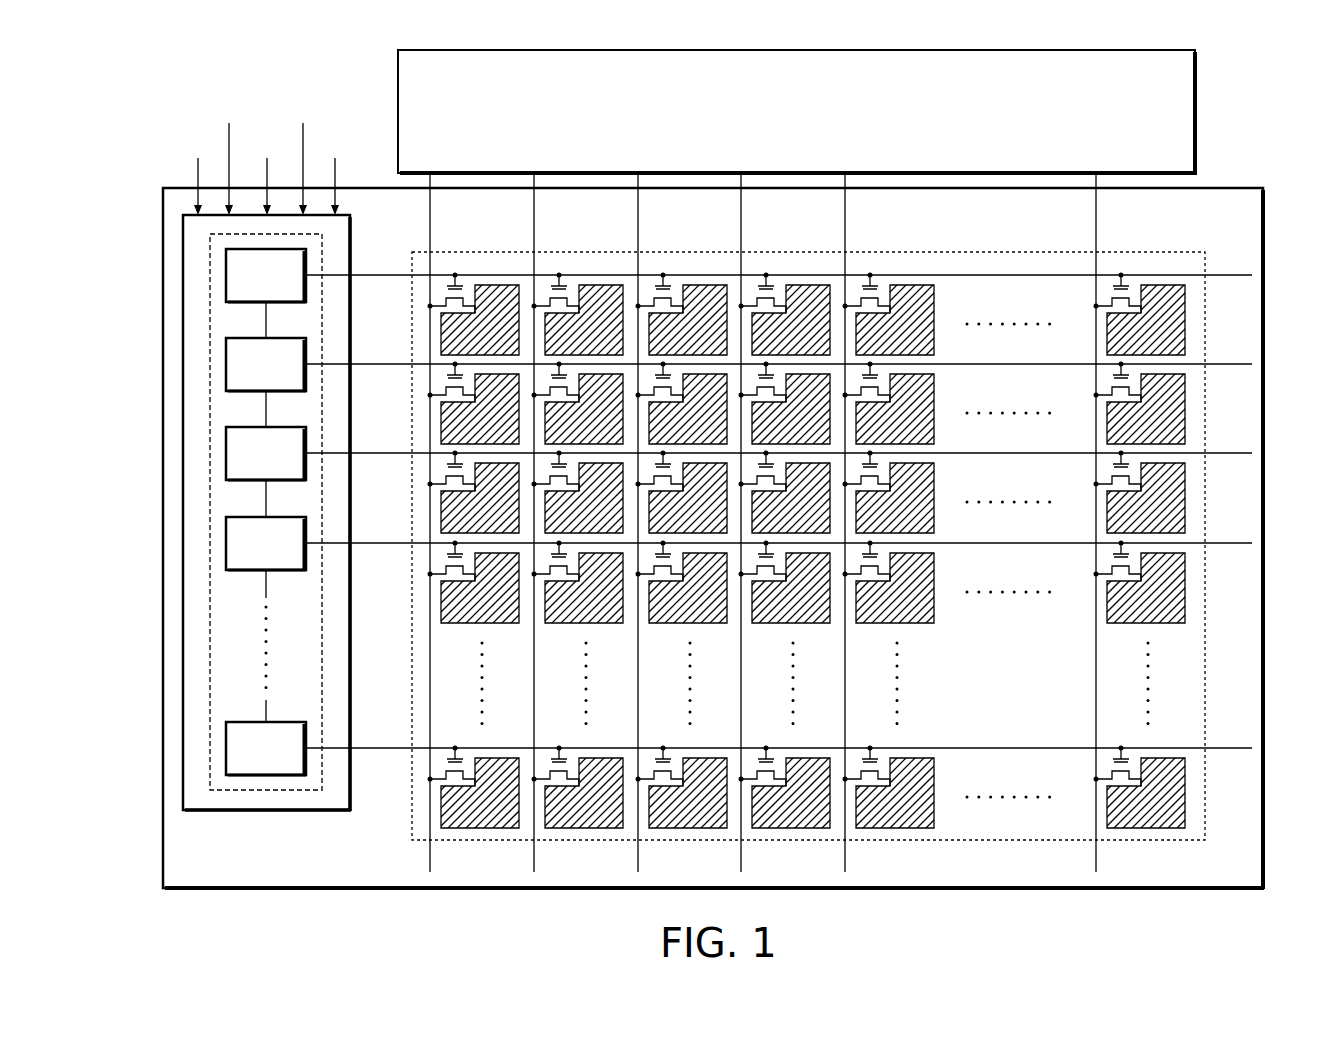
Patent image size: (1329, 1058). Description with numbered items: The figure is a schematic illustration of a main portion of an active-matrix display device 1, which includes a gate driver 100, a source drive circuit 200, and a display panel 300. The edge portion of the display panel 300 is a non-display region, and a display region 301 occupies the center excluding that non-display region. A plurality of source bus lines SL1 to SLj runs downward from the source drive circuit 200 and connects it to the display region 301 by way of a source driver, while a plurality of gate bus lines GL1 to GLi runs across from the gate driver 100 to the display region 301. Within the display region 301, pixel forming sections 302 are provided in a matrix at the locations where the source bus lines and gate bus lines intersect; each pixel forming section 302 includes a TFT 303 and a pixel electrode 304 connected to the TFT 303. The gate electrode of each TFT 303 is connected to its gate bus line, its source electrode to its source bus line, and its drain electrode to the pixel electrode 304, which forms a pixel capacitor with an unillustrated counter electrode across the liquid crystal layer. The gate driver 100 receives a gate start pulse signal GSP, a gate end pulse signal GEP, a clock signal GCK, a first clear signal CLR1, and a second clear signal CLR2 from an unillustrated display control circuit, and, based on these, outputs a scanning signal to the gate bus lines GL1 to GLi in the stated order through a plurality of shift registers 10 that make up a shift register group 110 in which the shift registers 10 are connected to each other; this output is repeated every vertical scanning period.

The display device 1 is at (1306, 81).
The source drive circuit 200 is at (1196, 130).
The display panel 300 is at (1265, 256).
The display region 301 is at (1207, 656).
The pixel forming section 302 is at (482, 280).
The TFT 303 is at (447, 288).
The pixel electrode 304 is at (500, 290).
The gate driver 100 is at (183, 365).
The shift register group 110 is at (262, 792).
The shift register 10 is at (262, 722).
The gate start pulse signal GSP is at (193, 176).
The gate end pulse signal GEP is at (228, 157).
The clock signal GCK is at (263, 176).
The first clear signal CLR1 is at (300, 157).
The second clear signal CLR2 is at (334, 176).
The source bus line SL1 is at (430, 226).
The source bus line SLj is at (1097, 232).
The gate bus line GL1 is at (376, 275).
The gate bus line GLi is at (395, 748).